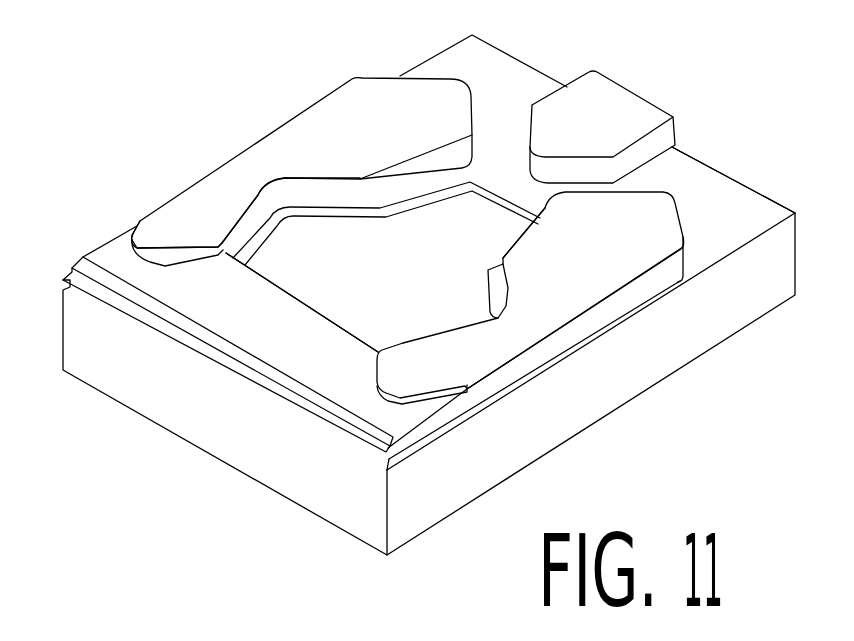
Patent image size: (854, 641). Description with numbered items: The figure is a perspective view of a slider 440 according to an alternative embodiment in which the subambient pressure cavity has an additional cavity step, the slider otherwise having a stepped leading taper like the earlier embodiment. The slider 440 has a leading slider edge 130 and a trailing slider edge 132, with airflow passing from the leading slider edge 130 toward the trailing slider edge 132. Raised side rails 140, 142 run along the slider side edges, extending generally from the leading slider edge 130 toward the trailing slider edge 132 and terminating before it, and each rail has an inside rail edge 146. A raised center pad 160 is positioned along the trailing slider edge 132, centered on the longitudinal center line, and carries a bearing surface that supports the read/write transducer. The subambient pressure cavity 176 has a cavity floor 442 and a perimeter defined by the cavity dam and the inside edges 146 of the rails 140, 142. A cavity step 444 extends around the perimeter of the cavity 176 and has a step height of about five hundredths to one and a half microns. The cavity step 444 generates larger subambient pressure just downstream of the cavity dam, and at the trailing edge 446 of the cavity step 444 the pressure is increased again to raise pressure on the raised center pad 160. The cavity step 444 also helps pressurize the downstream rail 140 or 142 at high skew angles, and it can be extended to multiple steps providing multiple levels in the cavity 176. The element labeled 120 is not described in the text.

The slider 440 is at (133, 129).
The raised side rail 142 is at (348, 129).
The inside rail edge 146 is at (320, 177).
The trailing edge of cavity step 446 is at (505, 186).
The raised center pad 160 is at (614, 86).
The trailing slider edge 132 is at (752, 185).
The cavity floor 442 is at (438, 267).
The subambient pressure cavity 176 is at (398, 259).
The cavity step 444 is at (311, 211).
The raised side rail 140 is at (630, 241).
The substrate layer 120 is at (269, 323).
The leading slider edge 130 is at (333, 505).